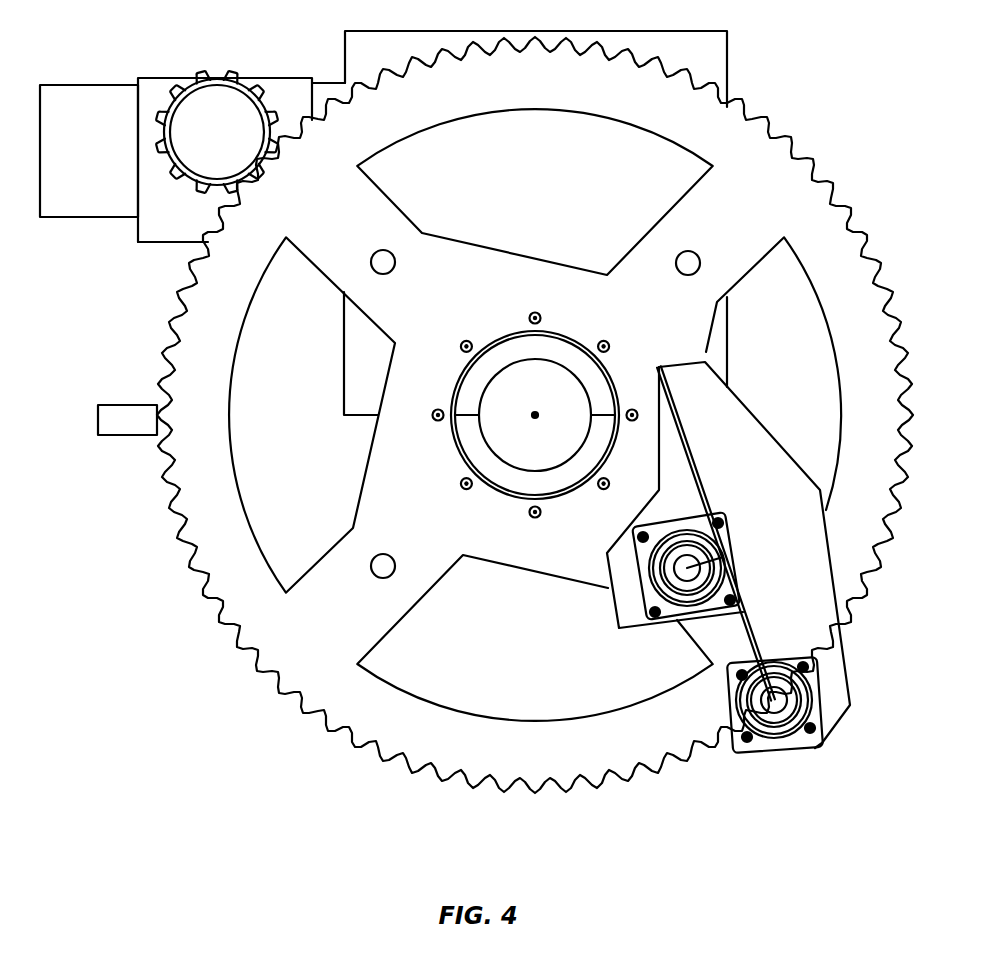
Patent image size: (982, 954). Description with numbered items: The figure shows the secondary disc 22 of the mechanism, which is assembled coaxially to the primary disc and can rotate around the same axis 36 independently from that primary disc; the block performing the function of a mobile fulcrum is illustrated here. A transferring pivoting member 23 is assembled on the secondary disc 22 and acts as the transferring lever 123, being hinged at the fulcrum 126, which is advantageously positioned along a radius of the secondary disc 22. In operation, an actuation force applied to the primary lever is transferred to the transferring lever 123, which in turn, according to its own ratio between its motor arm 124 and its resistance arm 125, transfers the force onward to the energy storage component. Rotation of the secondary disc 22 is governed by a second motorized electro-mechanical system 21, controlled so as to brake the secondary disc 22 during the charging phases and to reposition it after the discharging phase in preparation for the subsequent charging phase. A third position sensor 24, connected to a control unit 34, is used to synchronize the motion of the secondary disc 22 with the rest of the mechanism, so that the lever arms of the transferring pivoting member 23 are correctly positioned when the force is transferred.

The second motorized electro-mechanical system 21 is at (287, 77).
The secondary disc 22 is at (858, 250).
The transferring pivoting member 23 is at (845, 658).
The third position sensor 24 is at (100, 435).
The control unit 34 is at (728, 56).
The axis 36 is at (535, 414).
The transferring lever 123 is at (748, 562).
The motor arm 124 is at (697, 467).
The resistance arm 125 is at (760, 633).
The fulcrum 126 is at (678, 630).